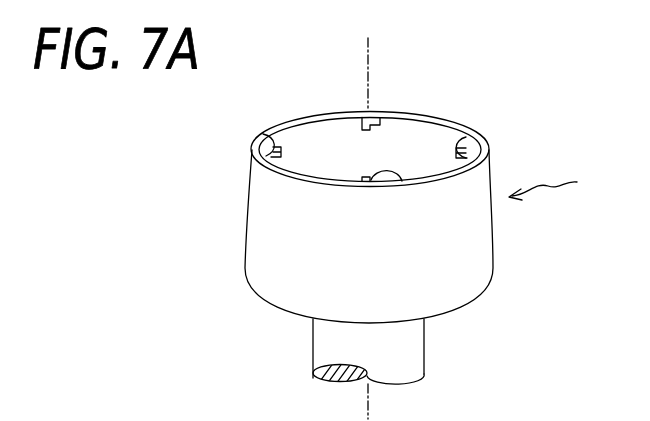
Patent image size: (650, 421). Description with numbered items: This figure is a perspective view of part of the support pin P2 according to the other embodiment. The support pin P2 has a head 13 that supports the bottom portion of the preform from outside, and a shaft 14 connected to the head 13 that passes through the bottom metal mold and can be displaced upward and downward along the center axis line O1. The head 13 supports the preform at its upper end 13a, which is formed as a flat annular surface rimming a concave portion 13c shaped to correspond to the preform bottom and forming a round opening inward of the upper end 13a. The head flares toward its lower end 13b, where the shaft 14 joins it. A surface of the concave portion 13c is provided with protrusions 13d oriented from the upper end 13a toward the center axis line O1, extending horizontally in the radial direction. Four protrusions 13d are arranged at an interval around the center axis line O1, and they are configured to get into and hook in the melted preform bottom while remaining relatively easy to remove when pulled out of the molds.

The head 13 is at (258, 217).
The upper end 13a is at (312, 118).
The lower end 13b is at (268, 306).
The concave portion 13c is at (413, 158).
The protrusion 13d is at (266, 129).
The shaft 14 is at (404, 347).
The center axis line O1 is at (370, 213).
The support pin P2 is at (564, 189).